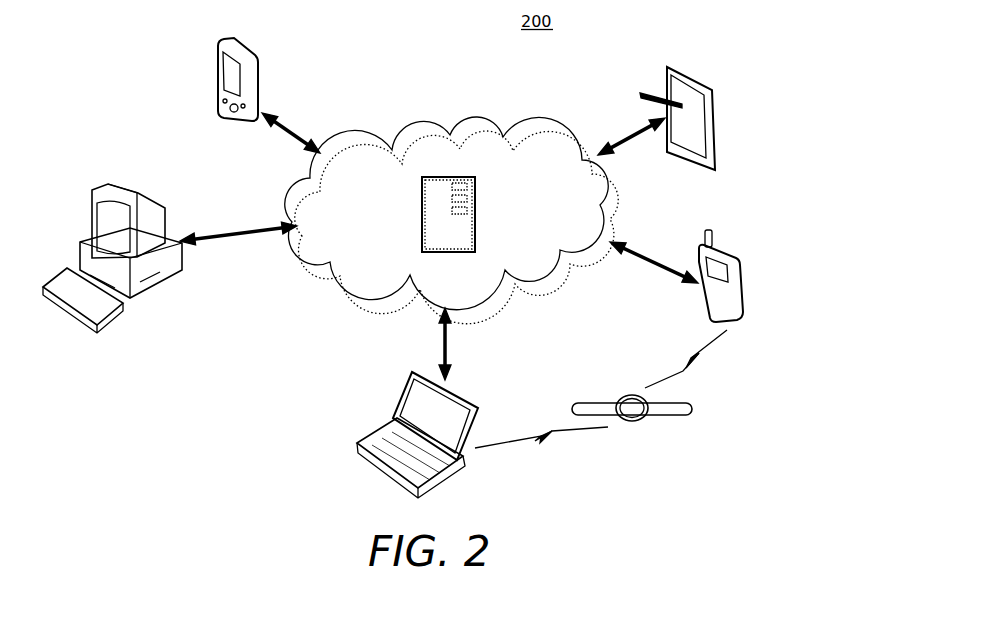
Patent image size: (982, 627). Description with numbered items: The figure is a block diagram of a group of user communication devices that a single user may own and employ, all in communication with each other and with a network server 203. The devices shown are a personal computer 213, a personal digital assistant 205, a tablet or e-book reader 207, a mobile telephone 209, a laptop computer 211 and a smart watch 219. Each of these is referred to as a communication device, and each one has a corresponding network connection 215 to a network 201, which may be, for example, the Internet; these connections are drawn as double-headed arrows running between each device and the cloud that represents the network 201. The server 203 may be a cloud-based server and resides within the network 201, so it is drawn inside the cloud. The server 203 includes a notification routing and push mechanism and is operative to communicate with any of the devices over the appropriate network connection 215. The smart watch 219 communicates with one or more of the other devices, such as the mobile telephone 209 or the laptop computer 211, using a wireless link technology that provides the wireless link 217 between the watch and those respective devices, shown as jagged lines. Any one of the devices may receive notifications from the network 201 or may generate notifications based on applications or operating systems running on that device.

The network 201 is at (537, 188).
The network server 203 is at (419, 214).
The personal digital assistant 205 is at (258, 69).
The tablet or e-book reader 207 is at (715, 117).
The mobile telephone 209 is at (744, 275).
The laptop computer 211 is at (458, 395).
The personal computer 213 is at (162, 208).
The network connection 215 is at (292, 125).
The wireless link 217 is at (702, 352).
The smart watch 219 is at (641, 418).